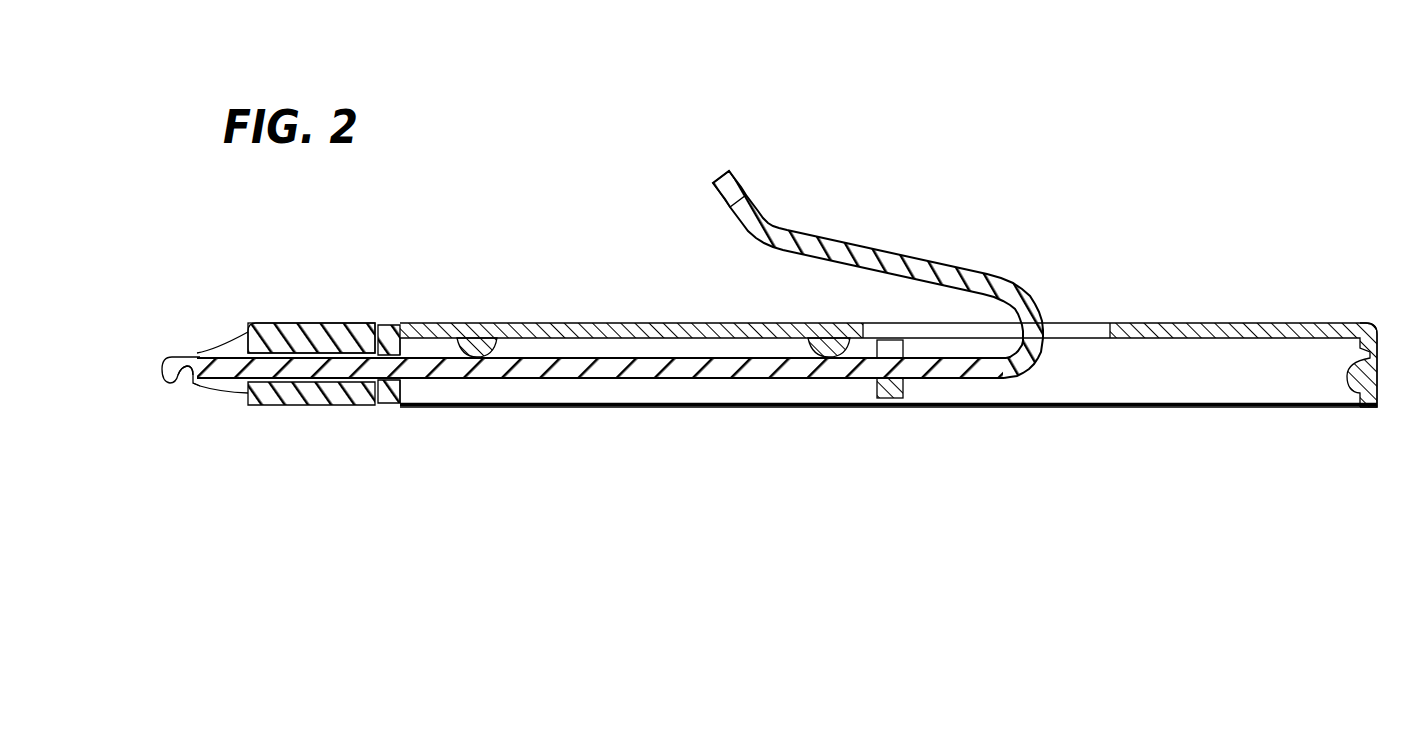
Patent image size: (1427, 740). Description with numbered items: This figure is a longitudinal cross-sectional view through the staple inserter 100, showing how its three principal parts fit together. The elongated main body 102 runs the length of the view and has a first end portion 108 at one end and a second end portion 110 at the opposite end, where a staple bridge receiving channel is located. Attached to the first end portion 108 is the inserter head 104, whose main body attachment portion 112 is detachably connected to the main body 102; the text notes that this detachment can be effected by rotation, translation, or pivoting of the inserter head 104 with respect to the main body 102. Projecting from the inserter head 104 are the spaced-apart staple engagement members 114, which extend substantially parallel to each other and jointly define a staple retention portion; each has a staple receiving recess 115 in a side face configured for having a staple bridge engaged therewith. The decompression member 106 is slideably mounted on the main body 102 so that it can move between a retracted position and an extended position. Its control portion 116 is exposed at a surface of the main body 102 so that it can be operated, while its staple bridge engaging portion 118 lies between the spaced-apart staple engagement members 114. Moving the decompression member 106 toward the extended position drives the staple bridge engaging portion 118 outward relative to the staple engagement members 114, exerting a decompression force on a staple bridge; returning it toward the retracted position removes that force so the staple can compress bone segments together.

The staple inserter 100 is at (513, 122).
The main body 102 is at (1147, 323).
The inserter head 104 is at (308, 325).
The decompression member 106 is at (925, 262).
The first end portion 108 is at (392, 325).
The second end portion 110 is at (1337, 325).
The main body attachment portion 112 is at (343, 325).
The spaced-apart staple engagement members 114 is at (188, 353).
The staple receiving recess 115 is at (180, 383).
The control portion 116 is at (740, 195).
The staple bridge engaging portion 118 is at (197, 387).